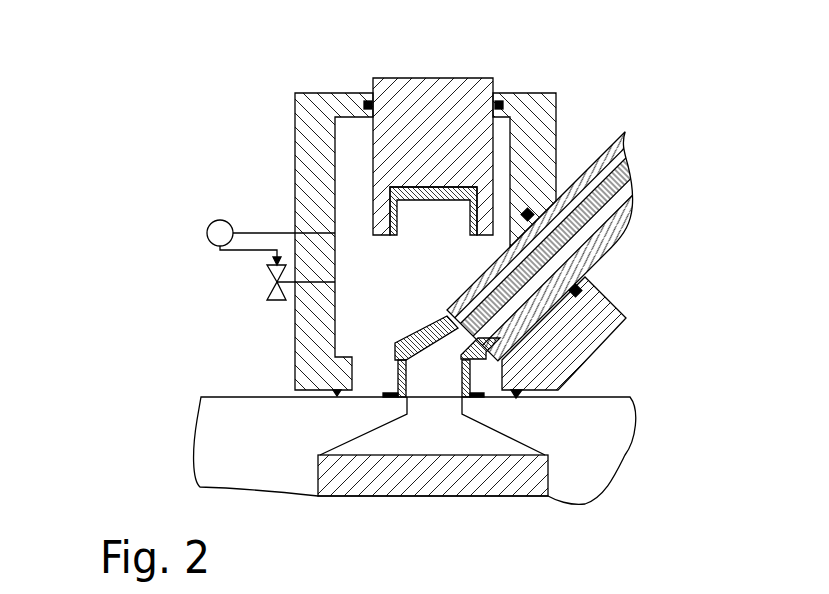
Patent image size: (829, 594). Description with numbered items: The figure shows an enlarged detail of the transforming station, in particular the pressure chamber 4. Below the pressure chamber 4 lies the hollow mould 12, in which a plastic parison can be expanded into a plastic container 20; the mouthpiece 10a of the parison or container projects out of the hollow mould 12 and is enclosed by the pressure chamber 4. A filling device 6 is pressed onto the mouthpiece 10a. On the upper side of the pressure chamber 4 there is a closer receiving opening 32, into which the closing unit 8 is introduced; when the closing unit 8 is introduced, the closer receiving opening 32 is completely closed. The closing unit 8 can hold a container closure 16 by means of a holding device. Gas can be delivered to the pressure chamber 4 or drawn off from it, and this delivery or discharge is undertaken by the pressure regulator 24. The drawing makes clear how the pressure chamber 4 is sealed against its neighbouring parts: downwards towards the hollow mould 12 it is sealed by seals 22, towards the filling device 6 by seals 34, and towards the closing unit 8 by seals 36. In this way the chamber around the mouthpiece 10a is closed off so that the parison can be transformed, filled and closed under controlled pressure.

The pressure chamber 4 is at (348, 332).
The filling device 6 is at (612, 247).
The closing unit 8 is at (432, 95).
The mouthpiece 10a is at (397, 382).
The hollow mould 12 is at (602, 465).
The container closure 16 is at (467, 213).
The plastic container 20 is at (418, 482).
The seals 22 is at (517, 397).
The pressure regulator 24 is at (207, 233).
The closer receiving opening 32 is at (368, 98).
The seals 34 is at (590, 288).
The seals 36 is at (500, 97).